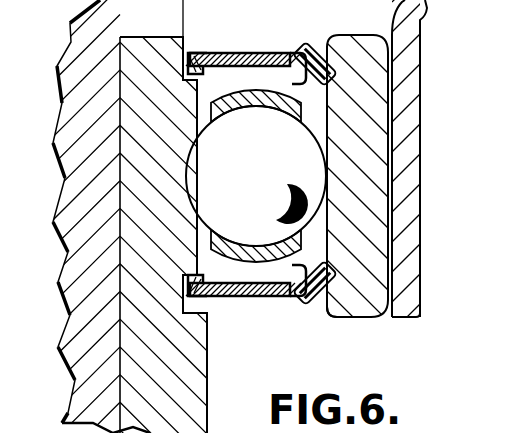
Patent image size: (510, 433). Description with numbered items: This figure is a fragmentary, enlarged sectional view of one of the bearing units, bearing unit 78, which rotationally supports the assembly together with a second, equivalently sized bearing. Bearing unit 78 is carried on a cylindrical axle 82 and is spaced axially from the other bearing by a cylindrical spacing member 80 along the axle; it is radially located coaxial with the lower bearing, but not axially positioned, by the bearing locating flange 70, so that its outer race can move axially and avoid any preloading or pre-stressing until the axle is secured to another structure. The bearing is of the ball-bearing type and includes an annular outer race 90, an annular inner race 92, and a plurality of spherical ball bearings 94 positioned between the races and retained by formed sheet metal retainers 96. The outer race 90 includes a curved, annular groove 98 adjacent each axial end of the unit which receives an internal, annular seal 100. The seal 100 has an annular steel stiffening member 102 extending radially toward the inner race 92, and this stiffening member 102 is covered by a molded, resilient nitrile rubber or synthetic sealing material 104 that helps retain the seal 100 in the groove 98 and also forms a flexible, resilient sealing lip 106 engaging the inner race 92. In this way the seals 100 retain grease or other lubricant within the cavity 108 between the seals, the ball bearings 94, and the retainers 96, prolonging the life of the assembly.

The bearing locating flange 70 is at (403, 127).
The bearing unit 78 is at (333, 322).
The spacing member 80 is at (197, 399).
The axle 82 is at (82, 97).
The outer race 90 is at (343, 300).
The inner race 92 is at (128, 192).
The ball bearings 94 is at (266, 161).
The sheet metal retainers 96 is at (308, 66).
The annular groove 98 is at (340, 273).
The internal annular seal 100 is at (285, 48).
The steel stiffening member 102 is at (290, 282).
The resilient sealing material 104 is at (250, 303).
The sealing lip 106 is at (197, 303).
The cavity 108 is at (218, 90).